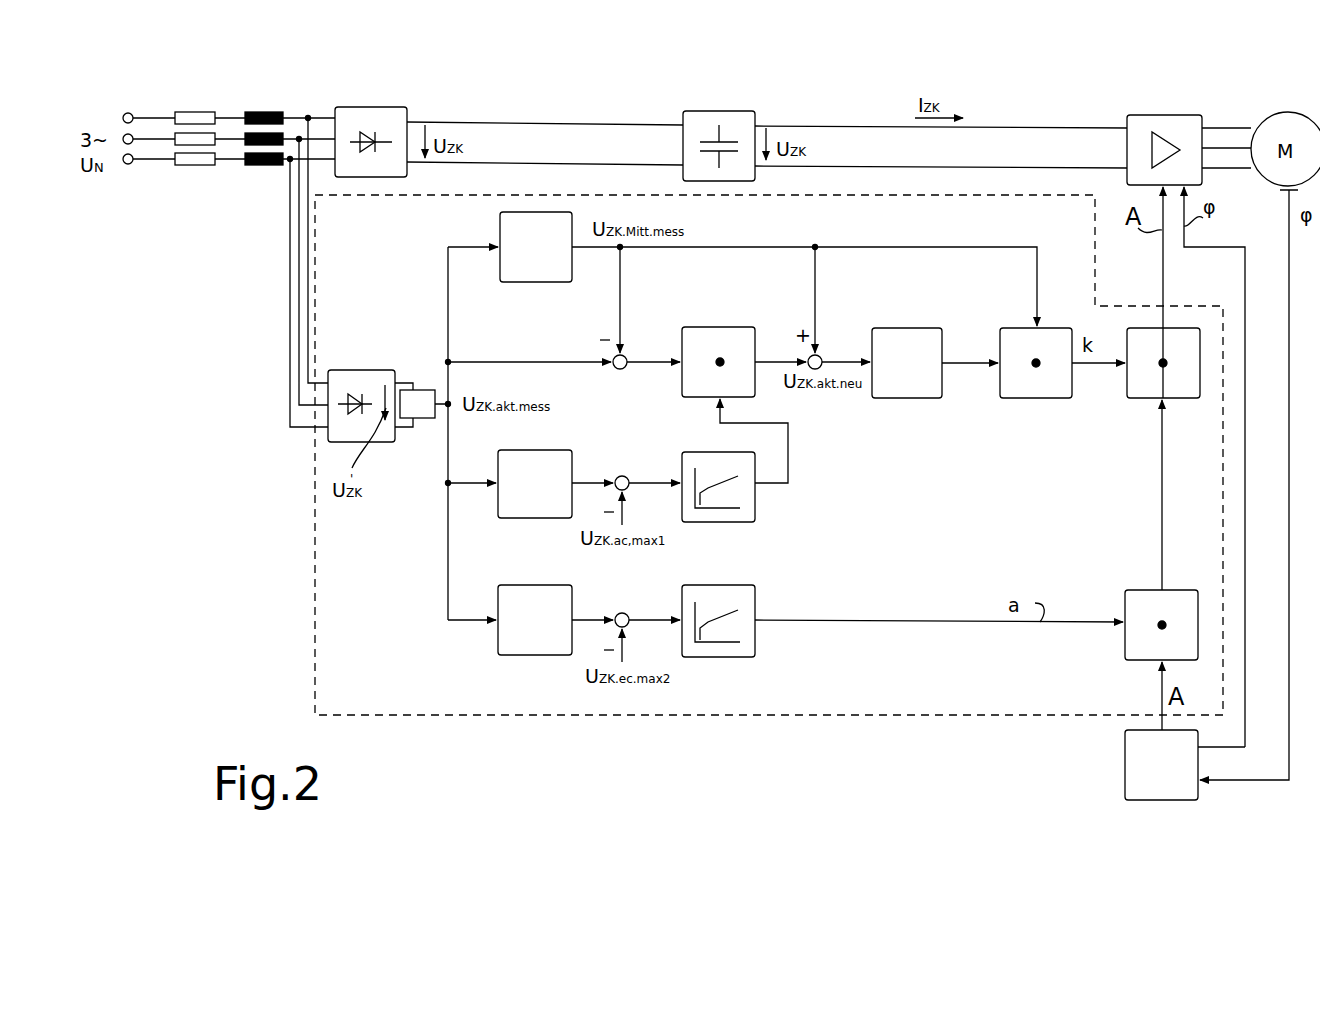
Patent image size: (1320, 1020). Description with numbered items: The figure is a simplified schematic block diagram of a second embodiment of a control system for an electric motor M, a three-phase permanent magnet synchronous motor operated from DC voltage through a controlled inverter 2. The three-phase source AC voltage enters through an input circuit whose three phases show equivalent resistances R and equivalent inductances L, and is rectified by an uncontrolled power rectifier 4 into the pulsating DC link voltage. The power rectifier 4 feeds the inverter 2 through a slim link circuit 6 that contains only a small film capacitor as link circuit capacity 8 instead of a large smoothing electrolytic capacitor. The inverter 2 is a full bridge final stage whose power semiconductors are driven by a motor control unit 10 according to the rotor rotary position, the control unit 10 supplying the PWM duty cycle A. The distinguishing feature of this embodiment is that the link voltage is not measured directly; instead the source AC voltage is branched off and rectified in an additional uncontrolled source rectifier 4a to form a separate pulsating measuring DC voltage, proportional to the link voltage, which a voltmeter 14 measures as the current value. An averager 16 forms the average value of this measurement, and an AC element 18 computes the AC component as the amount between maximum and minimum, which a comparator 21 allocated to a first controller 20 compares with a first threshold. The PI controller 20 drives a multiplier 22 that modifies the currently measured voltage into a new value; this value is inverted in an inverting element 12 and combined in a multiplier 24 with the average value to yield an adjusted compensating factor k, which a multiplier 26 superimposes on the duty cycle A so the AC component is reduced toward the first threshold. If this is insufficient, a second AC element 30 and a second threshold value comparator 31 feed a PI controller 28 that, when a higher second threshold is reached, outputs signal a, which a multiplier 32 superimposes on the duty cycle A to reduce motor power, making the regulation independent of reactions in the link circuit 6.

The inverter 2 is at (1180, 115).
The power rectifier 4 is at (378, 108).
The source rectifier 4a is at (358, 370).
The link circuit 6 is at (625, 120).
The link circuit capacity 8 is at (730, 117).
The motor control unit 10 is at (1133, 768).
The inverting element 12 is at (914, 328).
The voltmeter 14 is at (426, 420).
The averager 16 is at (534, 283).
The AC element 18 is at (531, 518).
The first controller 20 is at (741, 522).
The comparator 21 is at (624, 474).
The multiplier 22 is at (720, 327).
The multiplier 24 is at (1032, 398).
The multiplier 26 is at (1133, 398).
The PI controller 28 is at (718, 652).
The AC element 30 is at (531, 655).
The second threshold value comparator 31 is at (623, 611).
The multiplier 32 is at (1135, 652).
The equivalent resistances R is at (193, 170).
The equivalent inductances L is at (258, 170).